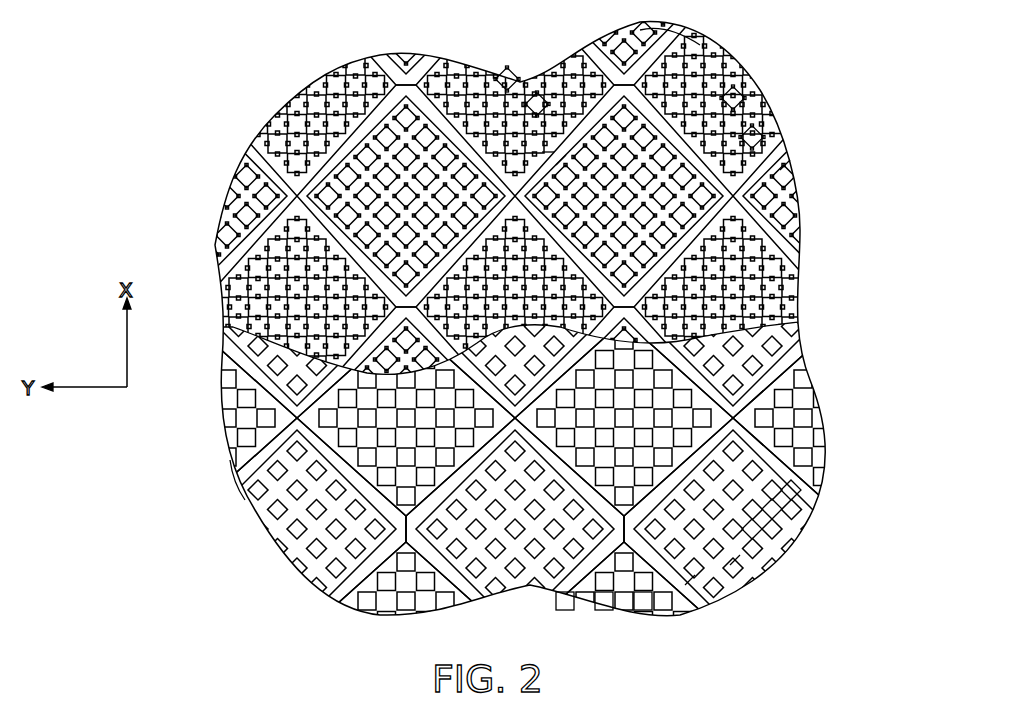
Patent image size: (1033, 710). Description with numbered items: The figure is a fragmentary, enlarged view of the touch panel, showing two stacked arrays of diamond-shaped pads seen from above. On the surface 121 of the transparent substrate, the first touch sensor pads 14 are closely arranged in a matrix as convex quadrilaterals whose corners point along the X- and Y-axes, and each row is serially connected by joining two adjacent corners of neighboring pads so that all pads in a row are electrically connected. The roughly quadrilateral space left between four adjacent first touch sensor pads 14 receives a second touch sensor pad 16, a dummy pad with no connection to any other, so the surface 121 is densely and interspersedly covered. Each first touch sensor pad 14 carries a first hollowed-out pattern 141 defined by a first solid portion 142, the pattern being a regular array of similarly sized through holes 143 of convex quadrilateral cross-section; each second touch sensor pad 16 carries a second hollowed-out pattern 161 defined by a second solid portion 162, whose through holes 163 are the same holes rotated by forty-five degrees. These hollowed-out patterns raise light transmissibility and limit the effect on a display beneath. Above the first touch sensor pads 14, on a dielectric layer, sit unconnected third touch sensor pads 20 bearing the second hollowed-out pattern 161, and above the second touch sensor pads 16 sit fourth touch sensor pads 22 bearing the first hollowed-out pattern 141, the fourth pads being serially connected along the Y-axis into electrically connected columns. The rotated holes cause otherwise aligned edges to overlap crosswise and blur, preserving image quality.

The first touch sensor pad 14 is at (740, 95).
The first hollowed-out pattern 141 is at (648, 604).
The first solid portion 142 is at (785, 168).
The through hole 143 is at (760, 138).
The second touch sensor pad 16 is at (790, 480).
The second hollowed-out pattern 161 is at (505, 78).
The second solid portion 162 is at (560, 165).
The through hole 163 is at (538, 100).
The third touch sensor pad 20 is at (548, 150).
The fourth touch sensor pad 22 is at (655, 40).
The surface 121 is at (236, 467).